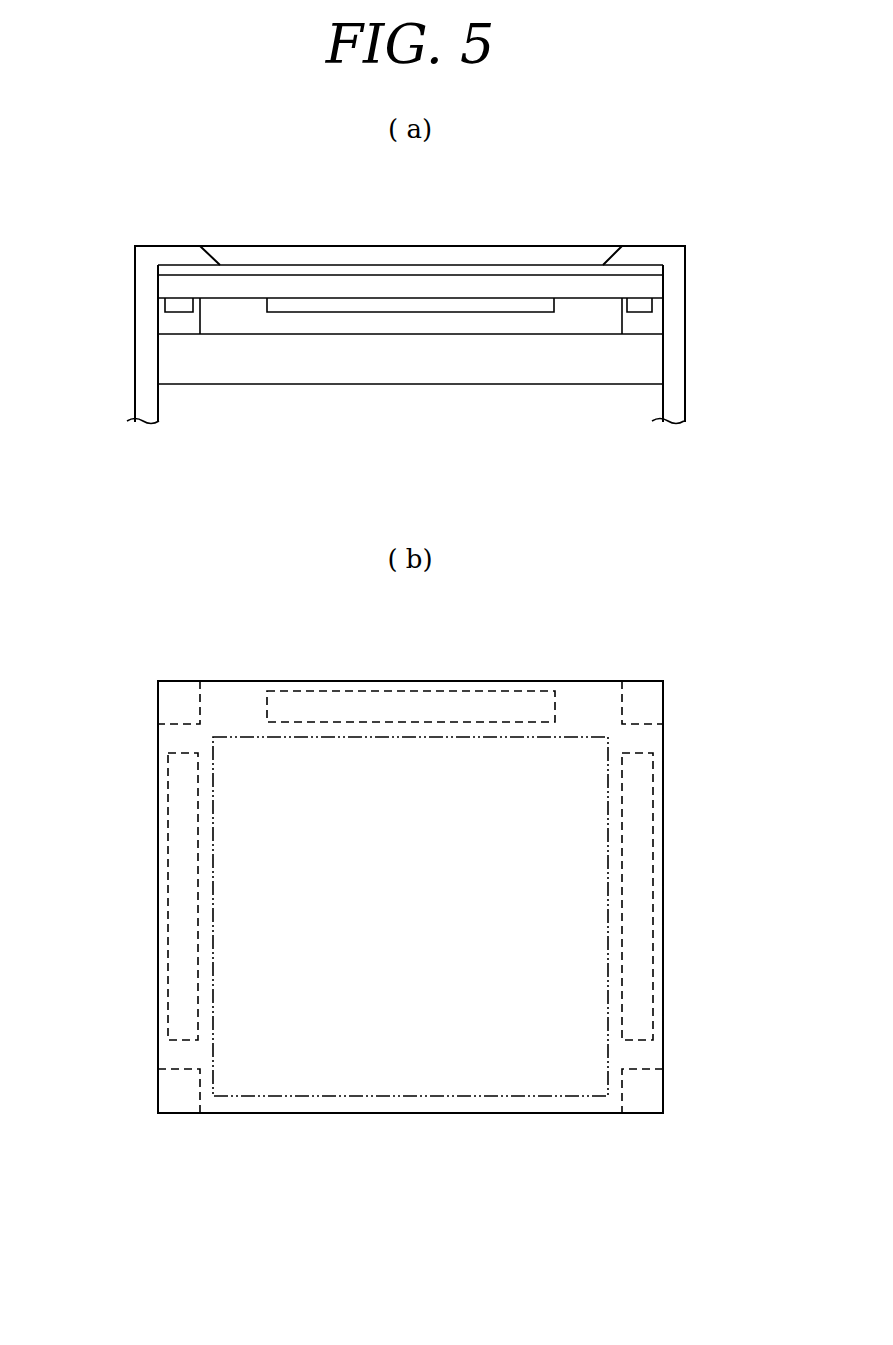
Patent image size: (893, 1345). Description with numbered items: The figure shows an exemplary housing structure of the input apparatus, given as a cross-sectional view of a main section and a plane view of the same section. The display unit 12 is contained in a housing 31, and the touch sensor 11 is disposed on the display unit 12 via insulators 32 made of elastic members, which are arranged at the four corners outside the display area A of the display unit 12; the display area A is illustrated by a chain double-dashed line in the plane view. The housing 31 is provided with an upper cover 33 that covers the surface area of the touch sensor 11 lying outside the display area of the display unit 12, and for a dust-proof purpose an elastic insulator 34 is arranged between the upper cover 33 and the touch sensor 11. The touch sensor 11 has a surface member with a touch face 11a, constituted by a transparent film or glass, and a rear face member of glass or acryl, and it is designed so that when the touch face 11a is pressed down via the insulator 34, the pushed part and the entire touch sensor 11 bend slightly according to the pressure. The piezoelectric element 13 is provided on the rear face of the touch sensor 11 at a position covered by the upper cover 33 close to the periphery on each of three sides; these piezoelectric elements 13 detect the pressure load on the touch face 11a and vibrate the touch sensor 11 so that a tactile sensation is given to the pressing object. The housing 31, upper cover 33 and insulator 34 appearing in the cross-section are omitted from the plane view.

The touch sensor 11 is at (268, 285).
The touch face 11a is at (324, 275).
The display unit 12 is at (324, 360).
The piezoelectric element 13 is at (165, 302).
The housing 31 is at (677, 387).
The insulator 32 is at (165, 323).
The upper cover 33 is at (638, 258).
The insulator 34 is at (517, 272).
The display area A is at (213, 802).